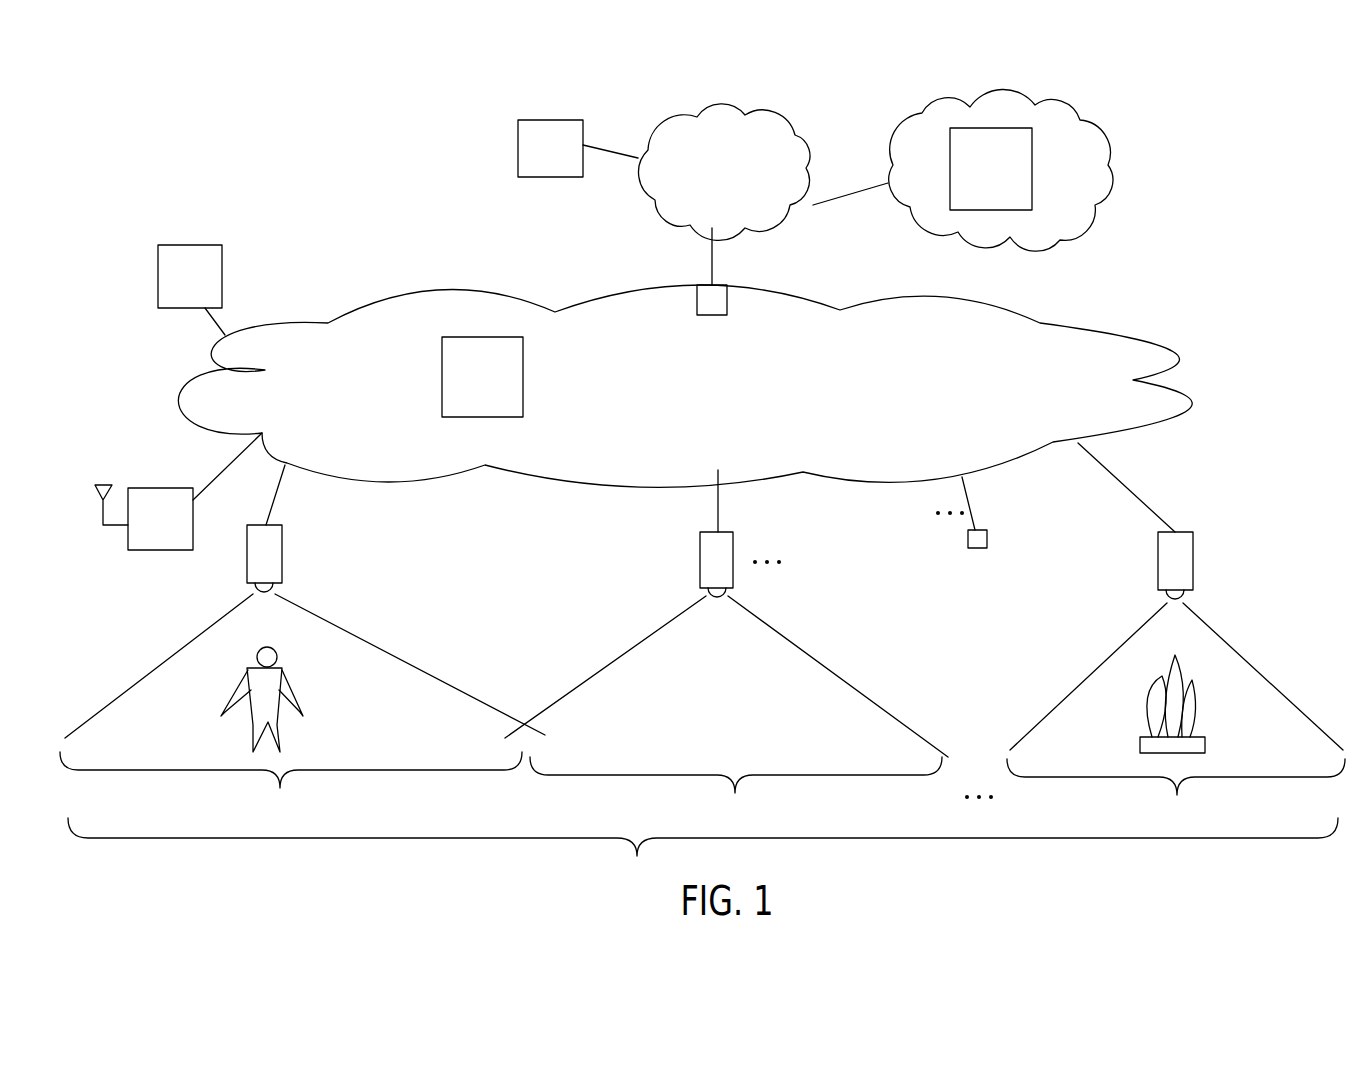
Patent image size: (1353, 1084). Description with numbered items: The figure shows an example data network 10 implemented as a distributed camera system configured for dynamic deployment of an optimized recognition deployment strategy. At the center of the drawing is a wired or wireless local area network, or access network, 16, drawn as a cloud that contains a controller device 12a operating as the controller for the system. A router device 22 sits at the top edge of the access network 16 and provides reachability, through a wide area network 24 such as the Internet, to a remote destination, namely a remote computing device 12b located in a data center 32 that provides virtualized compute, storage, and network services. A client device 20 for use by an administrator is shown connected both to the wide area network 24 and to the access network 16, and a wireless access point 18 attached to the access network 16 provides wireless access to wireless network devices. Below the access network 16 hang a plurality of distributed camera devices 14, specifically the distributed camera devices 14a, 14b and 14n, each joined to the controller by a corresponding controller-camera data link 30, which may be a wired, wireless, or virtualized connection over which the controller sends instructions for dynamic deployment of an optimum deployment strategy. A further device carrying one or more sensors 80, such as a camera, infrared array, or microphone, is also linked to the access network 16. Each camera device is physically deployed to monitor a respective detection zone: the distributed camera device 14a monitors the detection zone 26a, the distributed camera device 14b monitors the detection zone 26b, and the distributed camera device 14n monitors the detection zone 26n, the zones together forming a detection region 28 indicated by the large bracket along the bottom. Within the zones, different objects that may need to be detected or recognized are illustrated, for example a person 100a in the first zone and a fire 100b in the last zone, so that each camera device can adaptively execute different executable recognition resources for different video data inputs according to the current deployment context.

The data network 10 is at (528, 285).
The controller device 12a is at (458, 381).
The remote computing device 12b is at (1028, 152).
The distributed camera devices 14 is at (669, 562).
The distributed camera device 14a is at (272, 567).
The distributed camera device 14b is at (708, 558).
The distributed camera device 14n is at (1165, 562).
The local area network 16 is at (975, 316).
The wireless access point 18 is at (155, 488).
The client device 20 is at (518, 145).
The router device 22 is at (718, 300).
The wide area network 24 is at (660, 214).
The detection zone 26a is at (302, 707).
The detection zone 26b is at (726, 710).
The detection zone 26n is at (1176, 714).
The detection region 28 is at (703, 853).
The controller-camera data link 30 is at (280, 487).
The data center 32 is at (1100, 203).
The sensors 80 is at (982, 540).
The person 100a is at (276, 678).
The fire 100b is at (1218, 677).